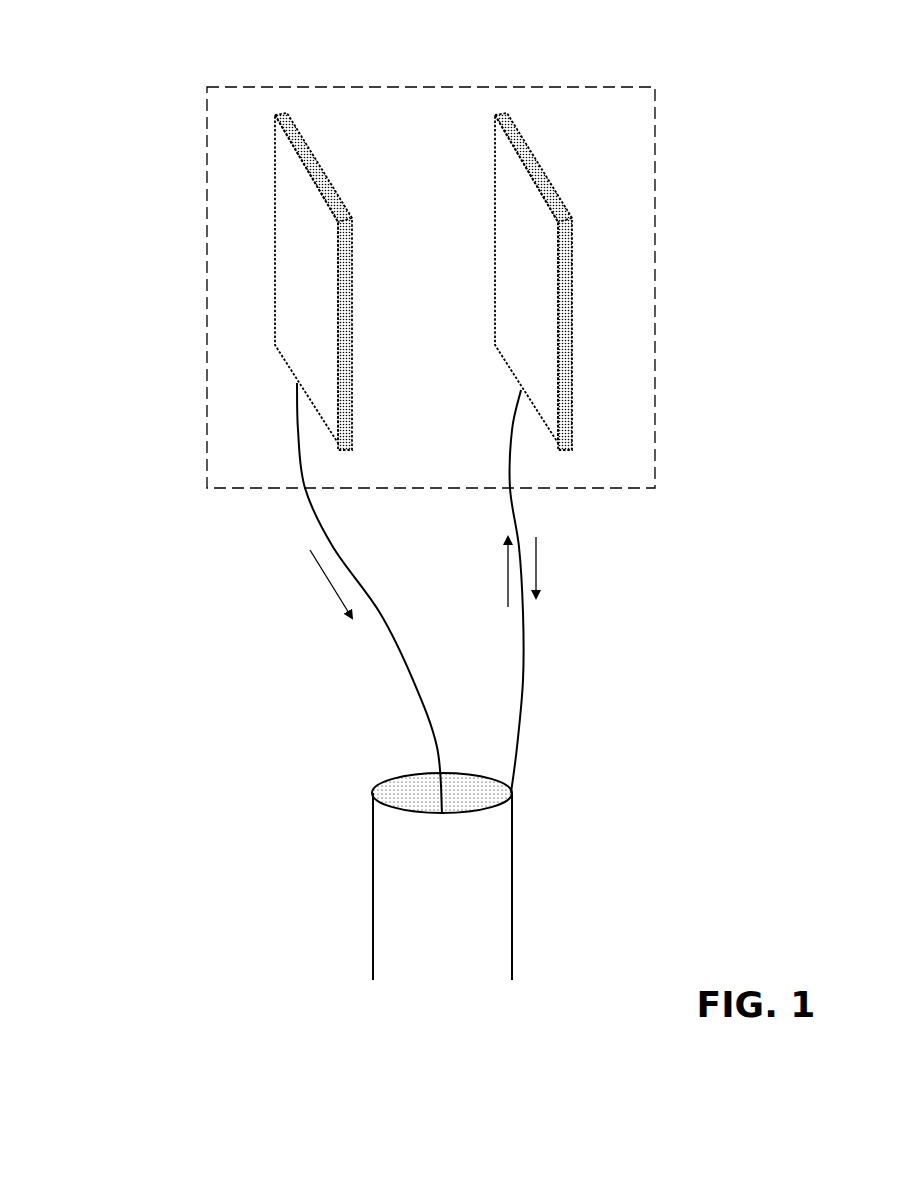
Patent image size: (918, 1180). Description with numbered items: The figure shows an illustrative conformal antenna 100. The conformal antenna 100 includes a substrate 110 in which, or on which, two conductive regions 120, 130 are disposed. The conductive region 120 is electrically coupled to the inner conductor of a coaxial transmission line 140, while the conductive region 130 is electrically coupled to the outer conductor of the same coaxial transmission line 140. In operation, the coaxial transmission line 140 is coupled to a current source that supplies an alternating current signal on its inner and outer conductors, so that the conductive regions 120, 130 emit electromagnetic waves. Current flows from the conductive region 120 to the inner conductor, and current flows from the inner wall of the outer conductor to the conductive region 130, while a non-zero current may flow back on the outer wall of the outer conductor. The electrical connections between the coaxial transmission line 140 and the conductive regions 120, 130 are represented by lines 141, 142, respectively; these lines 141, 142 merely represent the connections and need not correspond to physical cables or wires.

The conformal antenna 100 is at (110, 43).
The substrate 110 is at (431, 263).
The conductive region 120 is at (313, 281).
The conductive region 130 is at (533, 281).
The coaxial transmission line 140 is at (357, 876).
The line 141 is at (415, 688).
The line 142 is at (523, 690).